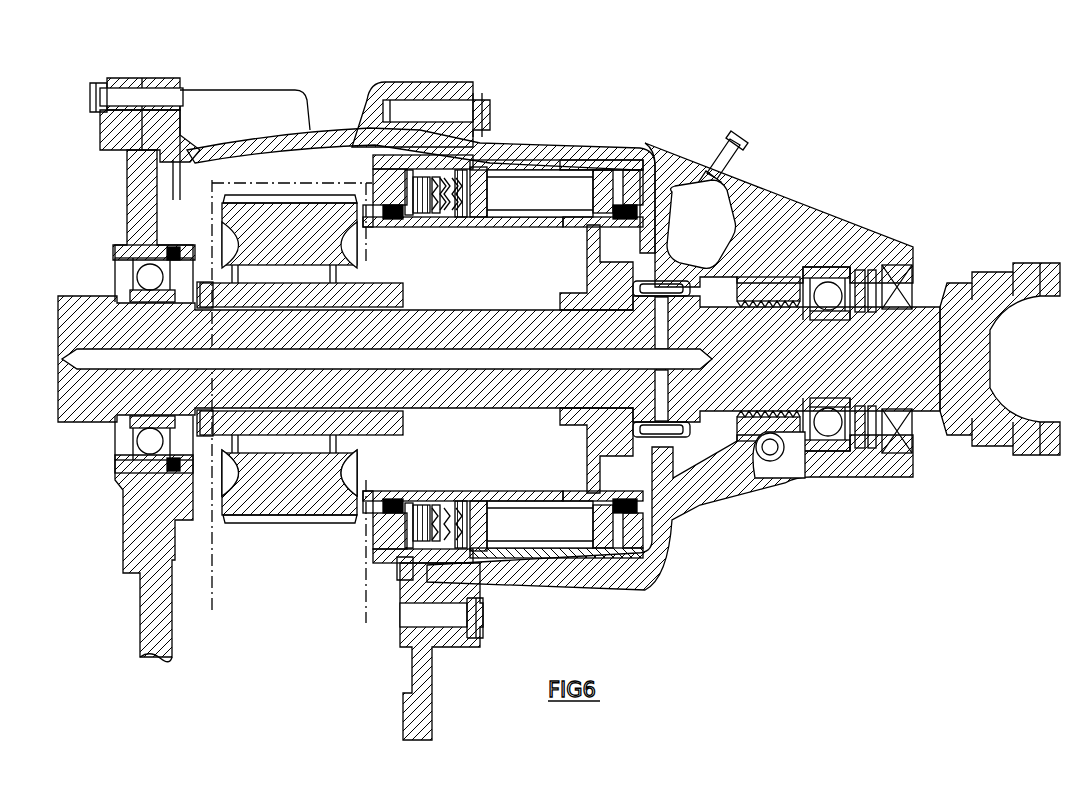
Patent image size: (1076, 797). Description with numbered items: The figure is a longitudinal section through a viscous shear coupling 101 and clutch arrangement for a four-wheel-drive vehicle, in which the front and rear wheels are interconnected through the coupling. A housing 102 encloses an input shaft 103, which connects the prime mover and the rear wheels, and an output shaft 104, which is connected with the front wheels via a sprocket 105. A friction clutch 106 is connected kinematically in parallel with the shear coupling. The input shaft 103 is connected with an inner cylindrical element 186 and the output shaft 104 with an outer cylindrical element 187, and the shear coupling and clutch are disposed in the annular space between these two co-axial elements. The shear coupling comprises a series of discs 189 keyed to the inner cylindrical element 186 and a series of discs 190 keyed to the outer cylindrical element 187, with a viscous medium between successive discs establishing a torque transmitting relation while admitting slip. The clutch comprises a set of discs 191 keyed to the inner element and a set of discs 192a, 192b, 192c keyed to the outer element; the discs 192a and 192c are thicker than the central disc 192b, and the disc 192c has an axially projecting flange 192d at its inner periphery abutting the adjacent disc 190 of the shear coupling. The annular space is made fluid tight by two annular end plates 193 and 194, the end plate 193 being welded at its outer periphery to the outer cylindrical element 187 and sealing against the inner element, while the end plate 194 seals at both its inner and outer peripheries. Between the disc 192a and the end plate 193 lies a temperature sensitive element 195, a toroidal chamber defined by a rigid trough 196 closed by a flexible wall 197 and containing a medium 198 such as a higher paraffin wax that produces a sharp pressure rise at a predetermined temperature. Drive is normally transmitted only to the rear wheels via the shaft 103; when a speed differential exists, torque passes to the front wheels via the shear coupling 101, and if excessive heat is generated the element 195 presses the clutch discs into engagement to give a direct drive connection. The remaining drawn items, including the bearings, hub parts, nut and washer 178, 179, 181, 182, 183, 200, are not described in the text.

The viscous shear coupling 101 is at (645, 221).
The housing 102 is at (567, 580).
The input shaft 103 is at (82, 318).
The output shaft 104 is at (298, 492).
The sprocket 105 is at (268, 492).
The friction clutch 106 is at (470, 212).
The spacer sleeve 178 is at (232, 312).
The left ball bearing 179 is at (130, 262).
The right ball bearing 181 is at (830, 292).
The locking lever nut 182 is at (675, 438).
The hub flange 183 is at (300, 312).
The inner cylindrical element 186 is at (553, 223).
The outer cylindrical element 187 is at (590, 180).
The discs keyed to inner cylindrical element 189 is at (583, 168).
The discs keyed to outer cylindrical element 190 is at (483, 185).
The clutch discs 191 is at (440, 205).
The clutch disc 192a is at (420, 172).
The central clutch disc 192b is at (437, 185).
The clutch disc 192c is at (470, 180).
The axially projecting flange 192d is at (607, 212).
The end plate 193 is at (378, 210).
The end plate 194 is at (630, 228).
The temperature sensitive element 195 is at (400, 212).
The rigid trough 196 is at (392, 222).
The flexible wall 197 is at (408, 190).
The medium 198 is at (392, 162).
The washer 200 is at (480, 192).